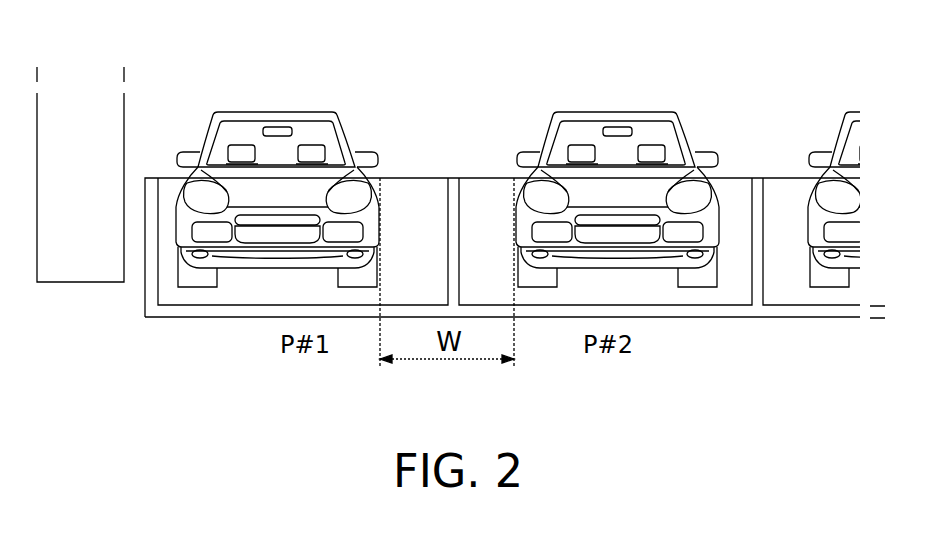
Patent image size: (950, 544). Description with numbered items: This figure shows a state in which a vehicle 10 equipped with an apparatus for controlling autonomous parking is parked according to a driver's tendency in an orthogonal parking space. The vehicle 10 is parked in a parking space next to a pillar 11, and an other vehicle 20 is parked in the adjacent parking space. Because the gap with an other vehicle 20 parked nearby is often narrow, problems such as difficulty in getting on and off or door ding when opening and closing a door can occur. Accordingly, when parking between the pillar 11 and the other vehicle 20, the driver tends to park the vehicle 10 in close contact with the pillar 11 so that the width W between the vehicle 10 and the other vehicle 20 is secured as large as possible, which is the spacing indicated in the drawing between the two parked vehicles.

The vehicle 10 is at (276, 114).
The pillar 11 is at (83, 268).
The other vehicle 20 is at (611, 114).